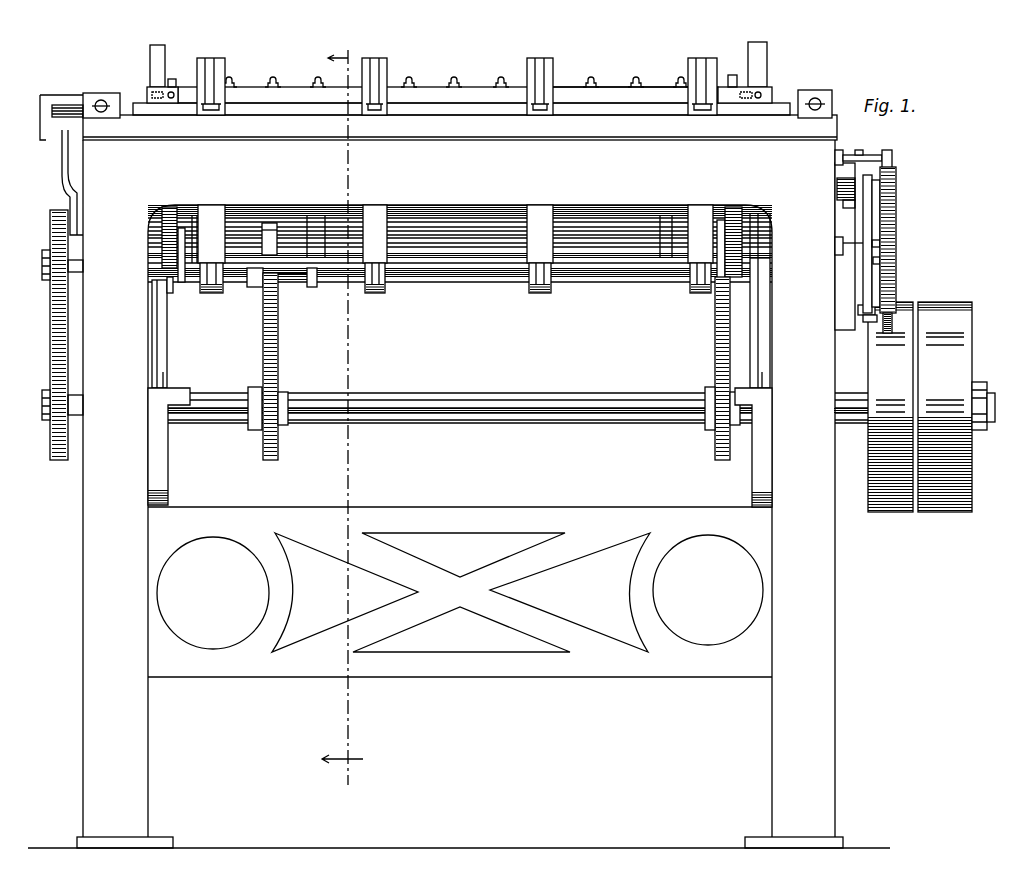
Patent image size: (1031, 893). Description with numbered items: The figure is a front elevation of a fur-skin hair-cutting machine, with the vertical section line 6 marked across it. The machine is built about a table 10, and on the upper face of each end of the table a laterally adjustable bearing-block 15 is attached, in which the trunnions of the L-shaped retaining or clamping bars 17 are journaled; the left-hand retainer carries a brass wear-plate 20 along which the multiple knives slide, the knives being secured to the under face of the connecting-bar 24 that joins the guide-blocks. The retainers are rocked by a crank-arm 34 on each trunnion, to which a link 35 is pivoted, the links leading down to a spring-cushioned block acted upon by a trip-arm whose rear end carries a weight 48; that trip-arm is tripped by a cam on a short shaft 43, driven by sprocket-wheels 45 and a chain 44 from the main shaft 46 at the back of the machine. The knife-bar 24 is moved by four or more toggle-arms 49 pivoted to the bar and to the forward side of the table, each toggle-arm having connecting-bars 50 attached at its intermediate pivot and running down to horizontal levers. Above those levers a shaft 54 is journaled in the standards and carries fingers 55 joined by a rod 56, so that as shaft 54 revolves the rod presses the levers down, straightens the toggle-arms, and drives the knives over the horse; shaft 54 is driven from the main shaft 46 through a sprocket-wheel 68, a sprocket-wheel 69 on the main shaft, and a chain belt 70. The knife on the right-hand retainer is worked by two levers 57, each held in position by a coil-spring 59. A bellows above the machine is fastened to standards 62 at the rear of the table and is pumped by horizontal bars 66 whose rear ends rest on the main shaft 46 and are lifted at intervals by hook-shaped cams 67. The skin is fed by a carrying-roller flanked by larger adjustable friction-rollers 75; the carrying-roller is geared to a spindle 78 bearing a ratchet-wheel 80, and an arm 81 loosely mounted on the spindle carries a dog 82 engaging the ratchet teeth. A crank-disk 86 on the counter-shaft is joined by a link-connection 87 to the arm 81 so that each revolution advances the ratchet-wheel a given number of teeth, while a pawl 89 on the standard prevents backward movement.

The section line 6 6 is at (342, 419).
The table 10 is at (460, 127).
The bearing-block 15 is at (102, 96).
The retaining or clamping bar 17 is at (461, 108).
The wear-plate 20 is at (448, 91).
The connecting-bar 24 is at (620, 94).
The crank-arm 34 is at (58, 102).
The link 35 is at (66, 190).
The short shaft 43 is at (297, 282).
The chain 44 is at (283, 353).
The sprocket-wheels 45 is at (279, 412).
The main shaft 46 is at (497, 395).
The weight 48 is at (263, 243).
The toggle-arms 49 is at (378, 73).
The connecting-bars 50 is at (456, 249).
The shaft 54 is at (466, 266).
The fingers 55 is at (188, 284).
The rod 56 is at (460, 239).
The levers 57 is at (158, 337).
The coil-spring 59 is at (161, 226).
The standards 62 is at (152, 62).
The horizontal bars 66 is at (163, 381).
The hook-shaped cams 67 is at (164, 462).
The sprocket-wheel 68 is at (50, 246).
The sprocket-wheel 69 is at (46, 432).
The chain belt 70 is at (50, 332).
The friction-roller 75 is at (519, 206).
The spindle 78 is at (860, 248).
The ratchet-wheel 80 is at (896, 243).
The arm 81 is at (716, 356).
The dog 82 is at (870, 320).
The crank-disk 86 is at (847, 246).
The link-connection 87 is at (870, 289).
The pawl 89 is at (891, 160).